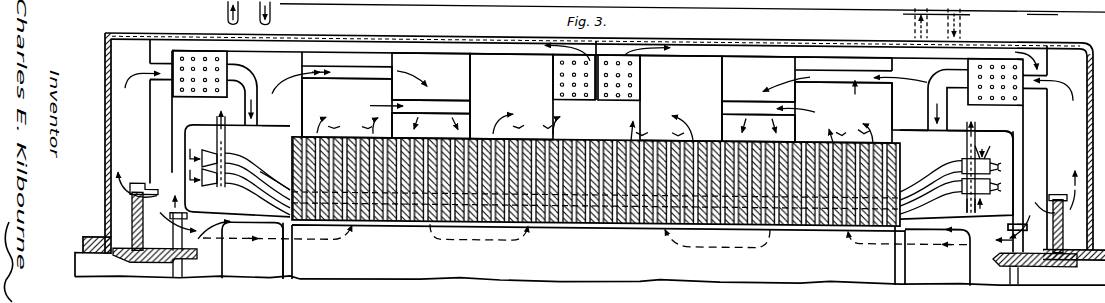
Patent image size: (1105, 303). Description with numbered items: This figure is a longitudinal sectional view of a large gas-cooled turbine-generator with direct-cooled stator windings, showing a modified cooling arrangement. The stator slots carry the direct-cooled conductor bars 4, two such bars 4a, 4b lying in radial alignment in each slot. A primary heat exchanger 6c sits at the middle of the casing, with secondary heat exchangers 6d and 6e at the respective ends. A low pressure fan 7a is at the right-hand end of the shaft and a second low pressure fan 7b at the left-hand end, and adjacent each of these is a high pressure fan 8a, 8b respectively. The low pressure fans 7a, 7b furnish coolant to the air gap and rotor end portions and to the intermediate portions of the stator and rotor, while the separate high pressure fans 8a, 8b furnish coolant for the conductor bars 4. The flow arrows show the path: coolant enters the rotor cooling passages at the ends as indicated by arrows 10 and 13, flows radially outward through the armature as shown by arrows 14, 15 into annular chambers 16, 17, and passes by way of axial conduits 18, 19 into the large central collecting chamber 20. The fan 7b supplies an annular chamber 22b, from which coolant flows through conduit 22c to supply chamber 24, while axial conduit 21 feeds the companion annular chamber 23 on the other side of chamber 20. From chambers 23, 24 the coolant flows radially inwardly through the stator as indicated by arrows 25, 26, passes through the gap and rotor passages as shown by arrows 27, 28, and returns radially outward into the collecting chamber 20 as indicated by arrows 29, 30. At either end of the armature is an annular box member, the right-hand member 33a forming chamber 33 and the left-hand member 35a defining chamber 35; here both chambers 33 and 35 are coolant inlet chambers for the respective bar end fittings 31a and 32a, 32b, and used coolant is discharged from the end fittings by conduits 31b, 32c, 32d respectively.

The conductor bars 4 is at (283, 181).
The conductor bar 4a is at (248, 190).
The conductor bar 4b is at (260, 165).
The primary heat exchanger 6c is at (588, 100).
The secondary heat exchanger 6d is at (176, 85).
The secondary heat exchanger 6e is at (1020, 92).
The low pressure fan 7a is at (998, 254).
The low pressure fan 7b is at (173, 255).
The high pressure fan 8a is at (1065, 208).
The high pressure fan 8b is at (131, 209).
The arrow 10 is at (237, 241).
The arrow 13 is at (958, 246).
The arrow 14 is at (347, 125).
The arrow 15 is at (851, 128).
The annular chamber 16 is at (338, 101).
The annular chamber 17 is at (840, 101).
The axial conduit 18 is at (452, 104).
The axial conduit 19 is at (740, 102).
The central collecting chamber 20 is at (538, 80).
The axial conduit 21 is at (861, 82).
The annular chamber 22b is at (292, 73).
The conduit 22c is at (332, 84).
The annular chamber 23 is at (768, 73).
The annular chamber 24 is at (452, 74).
The arrow 25 is at (758, 128).
The arrow 26 is at (431, 126).
The arrow 27 is at (462, 240).
The arrow 28 is at (710, 243).
The arrow 29 is at (526, 124).
The arrow 30 is at (676, 98).
The bar end fitting 31a is at (214, 187).
The conduit 31b is at (217, 140).
The bar end fitting 32a is at (987, 148).
The bar end fitting 32b is at (985, 196).
The conduit 32c is at (967, 136).
The conduit 32d is at (966, 199).
The chamber 33 is at (930, 144).
The annular box member 33a is at (1009, 125).
The chamber 35 is at (275, 142).
The annular box member 35a is at (272, 123).